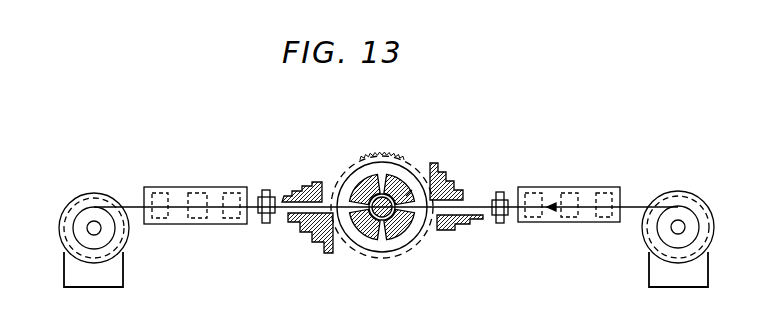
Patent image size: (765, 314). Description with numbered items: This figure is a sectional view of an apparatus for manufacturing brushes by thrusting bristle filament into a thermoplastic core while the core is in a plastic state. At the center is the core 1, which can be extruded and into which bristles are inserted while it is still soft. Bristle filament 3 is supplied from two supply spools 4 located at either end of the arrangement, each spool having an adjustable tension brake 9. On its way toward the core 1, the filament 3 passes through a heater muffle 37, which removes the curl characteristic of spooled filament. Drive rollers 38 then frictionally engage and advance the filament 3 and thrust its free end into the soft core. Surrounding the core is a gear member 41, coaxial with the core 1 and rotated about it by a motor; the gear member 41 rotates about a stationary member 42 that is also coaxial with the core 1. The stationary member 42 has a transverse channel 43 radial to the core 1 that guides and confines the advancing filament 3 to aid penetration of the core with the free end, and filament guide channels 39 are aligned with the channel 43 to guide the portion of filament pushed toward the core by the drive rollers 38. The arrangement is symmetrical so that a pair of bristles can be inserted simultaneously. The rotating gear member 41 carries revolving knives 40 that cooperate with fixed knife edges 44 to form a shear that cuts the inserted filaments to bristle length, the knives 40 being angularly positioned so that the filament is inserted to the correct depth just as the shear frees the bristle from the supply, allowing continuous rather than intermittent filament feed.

The core 1 is at (383, 215).
The bristle filament 3 is at (128, 203).
The supply spools 4 is at (93, 208).
The adjustable tension brakes 9 is at (72, 270).
The heater muffle 37 is at (190, 227).
The drive rollers 38 is at (258, 190).
The filament guide channels 39 is at (303, 190).
The revolving knives 40 is at (336, 200).
The gear member 41 is at (383, 150).
The stationary member 42 is at (395, 175).
The transverse channel 43 is at (412, 190).
The fixed knife edges 44 is at (330, 223).